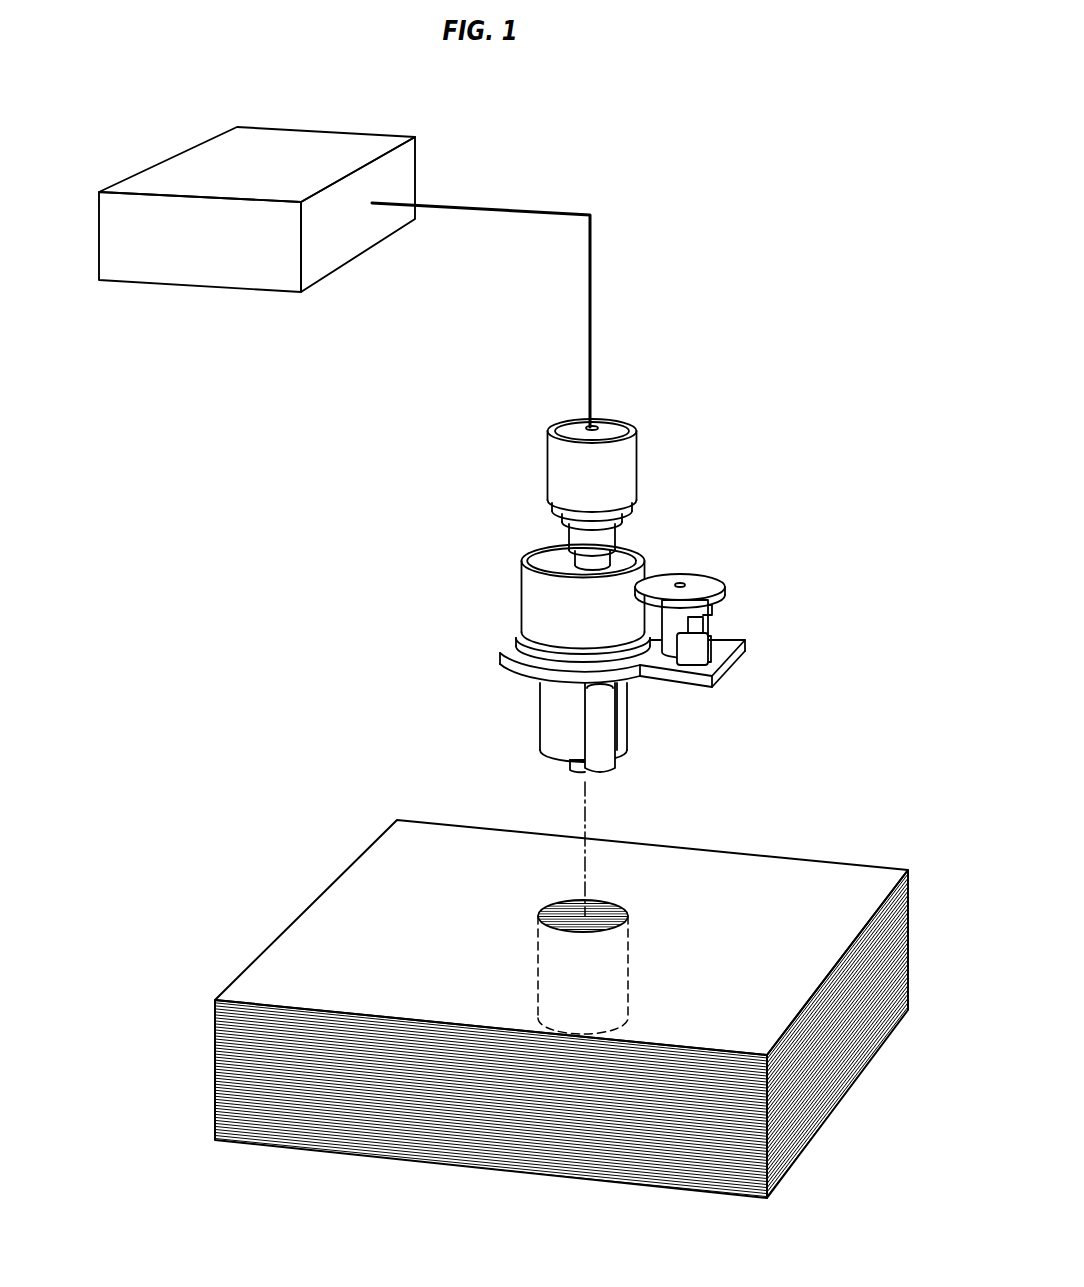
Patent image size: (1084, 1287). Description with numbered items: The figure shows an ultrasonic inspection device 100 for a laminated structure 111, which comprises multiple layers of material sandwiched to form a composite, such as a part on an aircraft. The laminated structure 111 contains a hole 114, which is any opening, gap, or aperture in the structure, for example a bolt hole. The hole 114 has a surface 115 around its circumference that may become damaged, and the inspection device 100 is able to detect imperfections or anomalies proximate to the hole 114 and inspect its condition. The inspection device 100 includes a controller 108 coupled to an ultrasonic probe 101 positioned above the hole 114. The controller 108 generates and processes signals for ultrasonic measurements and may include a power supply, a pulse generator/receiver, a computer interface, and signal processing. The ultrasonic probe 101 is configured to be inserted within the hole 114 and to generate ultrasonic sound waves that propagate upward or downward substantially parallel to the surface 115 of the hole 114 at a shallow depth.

The ultrasonic inspection device 100 is at (744, 186).
The ultrasonic probe 101 is at (480, 531).
The controller 108 is at (347, 247).
The laminated structure 111 is at (818, 873).
The hole 114 is at (556, 896).
The surface 115 is at (640, 910).